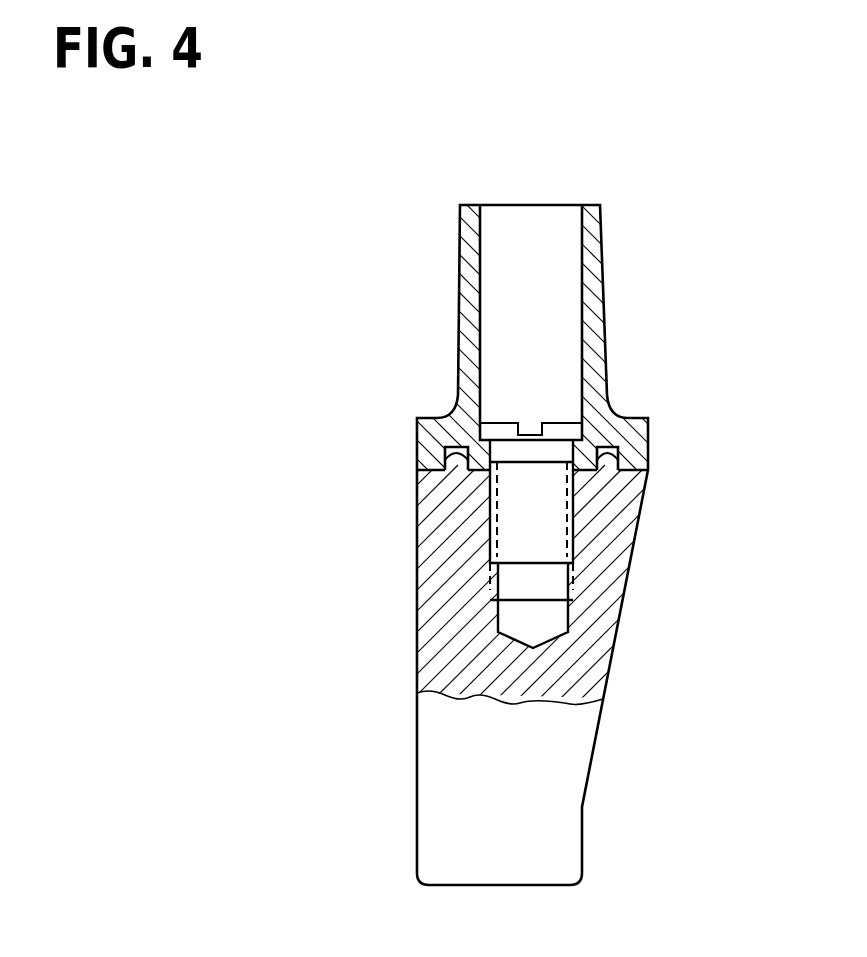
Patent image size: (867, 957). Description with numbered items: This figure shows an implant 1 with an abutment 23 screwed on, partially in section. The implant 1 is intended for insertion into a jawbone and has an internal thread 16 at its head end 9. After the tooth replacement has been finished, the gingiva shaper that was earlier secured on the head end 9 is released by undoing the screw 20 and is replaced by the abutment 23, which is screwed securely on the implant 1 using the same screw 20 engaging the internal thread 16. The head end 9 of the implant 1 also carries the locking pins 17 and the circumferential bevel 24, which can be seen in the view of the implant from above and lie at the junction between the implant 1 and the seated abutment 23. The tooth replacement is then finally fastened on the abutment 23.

The implant 1 is at (533, 738).
The head end 9 is at (628, 465).
The internal thread 16 is at (493, 575).
The locking pins 17 is at (440, 437).
The screw 20 is at (532, 502).
The abutment 23 is at (607, 305).
The circumferential bevel 24 is at (422, 470).